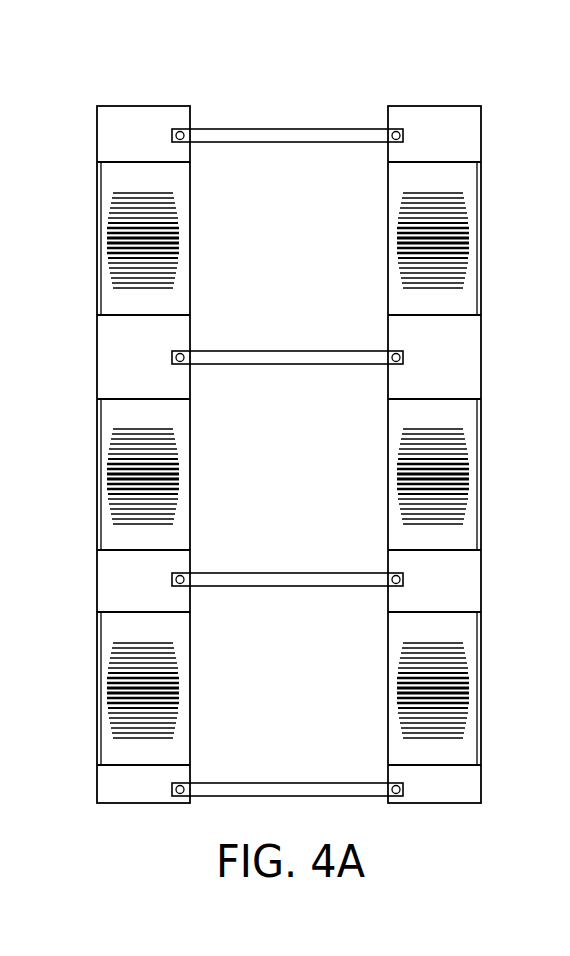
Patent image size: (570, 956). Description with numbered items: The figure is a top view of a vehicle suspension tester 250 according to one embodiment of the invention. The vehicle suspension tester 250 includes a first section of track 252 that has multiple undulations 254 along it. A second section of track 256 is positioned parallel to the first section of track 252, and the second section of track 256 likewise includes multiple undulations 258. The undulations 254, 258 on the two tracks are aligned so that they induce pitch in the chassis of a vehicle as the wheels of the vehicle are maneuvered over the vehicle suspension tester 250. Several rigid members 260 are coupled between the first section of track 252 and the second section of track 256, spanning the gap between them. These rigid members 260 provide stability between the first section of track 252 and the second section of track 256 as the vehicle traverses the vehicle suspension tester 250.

The vehicle suspension tester 250 is at (293, 70).
The first section of track 252 is at (148, 106).
The undulations 254 is at (97, 238).
The second section of track 256 is at (436, 106).
The undulations 258 is at (481, 241).
The rigid members 260 is at (290, 143).